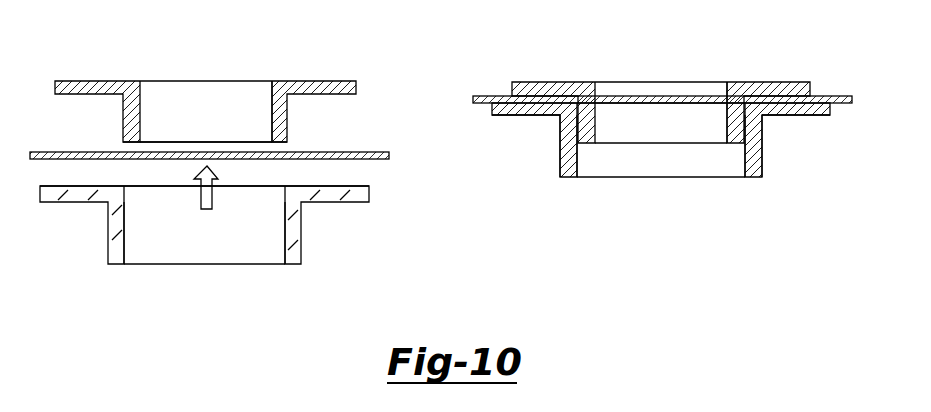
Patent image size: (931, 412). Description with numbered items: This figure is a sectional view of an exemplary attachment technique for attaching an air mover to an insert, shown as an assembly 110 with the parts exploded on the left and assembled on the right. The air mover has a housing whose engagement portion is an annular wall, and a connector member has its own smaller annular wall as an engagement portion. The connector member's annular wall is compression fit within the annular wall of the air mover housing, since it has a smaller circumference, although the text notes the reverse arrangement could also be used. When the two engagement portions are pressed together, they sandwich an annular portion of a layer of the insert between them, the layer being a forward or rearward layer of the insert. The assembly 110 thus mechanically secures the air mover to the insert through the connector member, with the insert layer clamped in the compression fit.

The assembly 110 is at (530, 158).